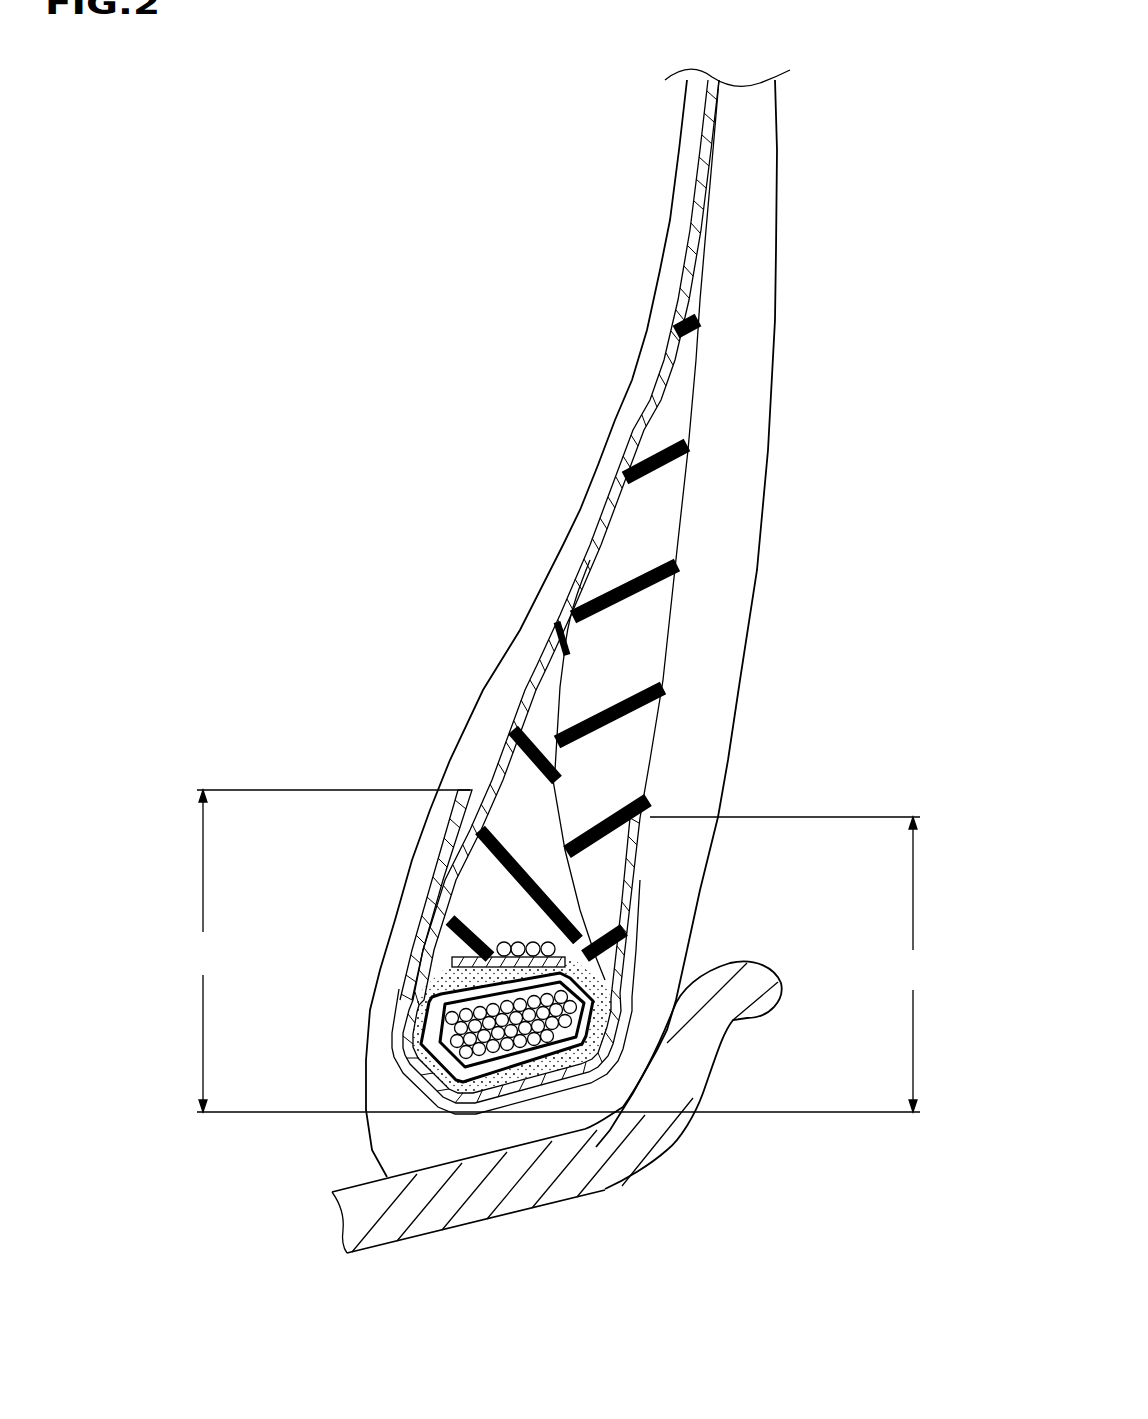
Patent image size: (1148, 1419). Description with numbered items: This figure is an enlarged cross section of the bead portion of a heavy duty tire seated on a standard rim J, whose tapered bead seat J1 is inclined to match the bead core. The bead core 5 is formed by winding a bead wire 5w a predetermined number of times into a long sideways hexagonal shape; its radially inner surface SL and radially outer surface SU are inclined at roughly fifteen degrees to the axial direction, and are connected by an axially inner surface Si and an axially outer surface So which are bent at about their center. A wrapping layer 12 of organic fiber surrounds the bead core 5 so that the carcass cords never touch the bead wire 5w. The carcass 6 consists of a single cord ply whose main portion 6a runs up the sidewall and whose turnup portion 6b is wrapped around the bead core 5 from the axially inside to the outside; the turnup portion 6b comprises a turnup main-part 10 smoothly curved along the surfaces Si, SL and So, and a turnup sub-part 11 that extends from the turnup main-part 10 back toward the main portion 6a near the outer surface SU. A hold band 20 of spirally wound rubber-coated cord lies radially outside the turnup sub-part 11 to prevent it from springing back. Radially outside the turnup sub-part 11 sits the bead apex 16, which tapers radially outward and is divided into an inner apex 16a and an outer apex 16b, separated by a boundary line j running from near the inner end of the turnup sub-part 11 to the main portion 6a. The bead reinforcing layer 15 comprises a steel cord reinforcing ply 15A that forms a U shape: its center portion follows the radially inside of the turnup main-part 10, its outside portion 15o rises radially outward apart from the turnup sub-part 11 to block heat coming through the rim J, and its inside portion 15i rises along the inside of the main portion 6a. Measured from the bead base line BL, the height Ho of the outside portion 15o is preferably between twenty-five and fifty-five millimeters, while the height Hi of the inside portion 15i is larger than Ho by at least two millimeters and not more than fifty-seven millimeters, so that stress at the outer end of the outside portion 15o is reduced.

The carcass 6 is at (542, 717).
The main portion 6a is at (640, 441).
The turnup portion 6b is at (595, 1086).
The turnup main-part 10 is at (543, 1086).
The bead apex 16 is at (460, 638).
The inner apex 16a is at (548, 692).
The outer apex 16b is at (640, 528).
The boundary line j is at (557, 715).
The hold band 20 is at (545, 943).
The bead reinforcing layer 15 is at (544, 1051).
The inside portion 15i is at (450, 858).
The outside portion 15o is at (650, 858).
The reinforcing ply 15A is at (583, 1098).
The turnup sub-part 11 is at (432, 980).
The wrapping layer 12 is at (420, 1082).
The bead core 5 is at (407, 1027).
The bead wire 5w is at (445, 1032).
The standard rim J is at (557, 1160).
The tapered bead seat J1 is at (438, 1206).
The bead base line BL is at (855, 1114).
The radial height of inside portion Hi is at (329, 951).
The radial height of outside portion Ho is at (792, 964).
The radially outer surface SU is at (540, 918).
The axially outer surface So is at (588, 1020).
The axially inner surface Si is at (440, 1085).
The radially inner surface SL is at (503, 1106).